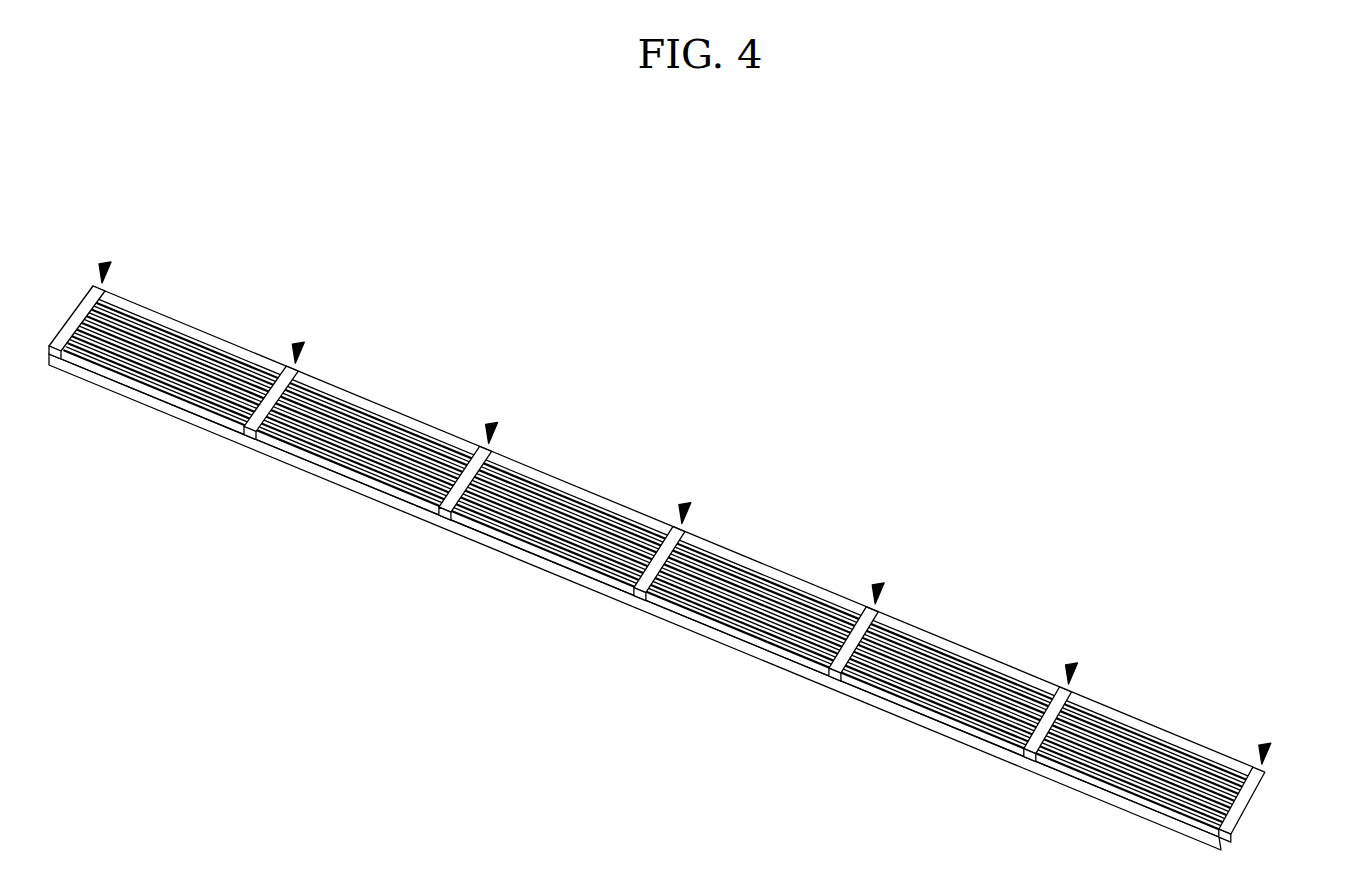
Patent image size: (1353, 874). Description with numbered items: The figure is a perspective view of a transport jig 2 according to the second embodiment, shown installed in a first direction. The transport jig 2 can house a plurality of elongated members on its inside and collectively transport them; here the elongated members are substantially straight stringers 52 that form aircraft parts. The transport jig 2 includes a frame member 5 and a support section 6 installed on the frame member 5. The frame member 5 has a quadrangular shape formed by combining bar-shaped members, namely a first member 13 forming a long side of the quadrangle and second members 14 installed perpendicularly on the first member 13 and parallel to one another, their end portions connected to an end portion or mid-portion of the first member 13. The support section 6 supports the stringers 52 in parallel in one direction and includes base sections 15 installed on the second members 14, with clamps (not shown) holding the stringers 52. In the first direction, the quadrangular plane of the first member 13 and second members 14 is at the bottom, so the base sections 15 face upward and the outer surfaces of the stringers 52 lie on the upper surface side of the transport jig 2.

The transport jig 2 is at (1050, 422).
The frame member 5 is at (651, 568).
The support section 6 is at (808, 468).
The first member 13 is at (645, 613).
The second member 14 is at (107, 292).
The base section 15 is at (105, 263).
The stringer 52 is at (550, 482).